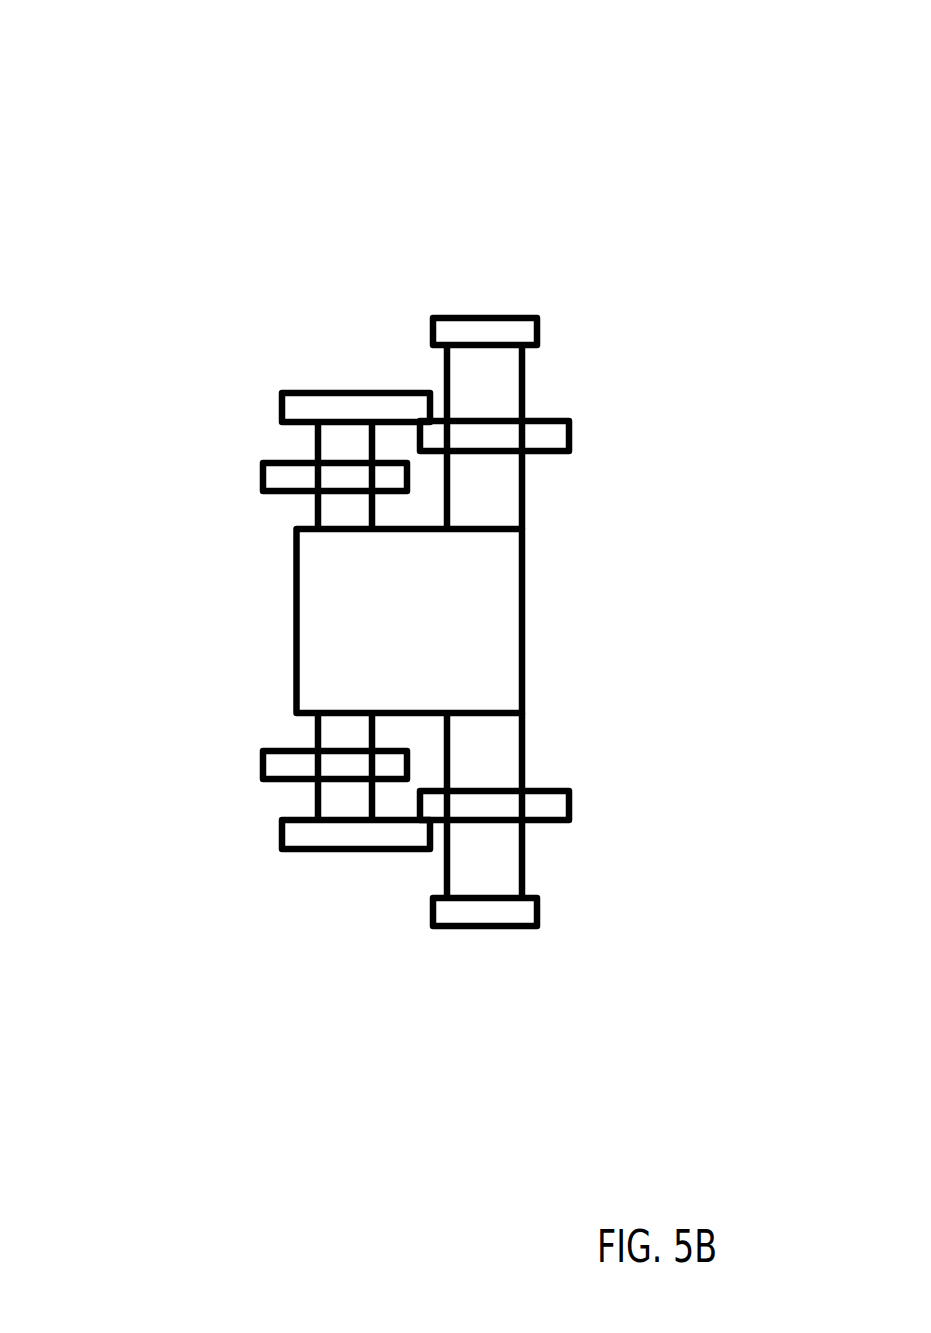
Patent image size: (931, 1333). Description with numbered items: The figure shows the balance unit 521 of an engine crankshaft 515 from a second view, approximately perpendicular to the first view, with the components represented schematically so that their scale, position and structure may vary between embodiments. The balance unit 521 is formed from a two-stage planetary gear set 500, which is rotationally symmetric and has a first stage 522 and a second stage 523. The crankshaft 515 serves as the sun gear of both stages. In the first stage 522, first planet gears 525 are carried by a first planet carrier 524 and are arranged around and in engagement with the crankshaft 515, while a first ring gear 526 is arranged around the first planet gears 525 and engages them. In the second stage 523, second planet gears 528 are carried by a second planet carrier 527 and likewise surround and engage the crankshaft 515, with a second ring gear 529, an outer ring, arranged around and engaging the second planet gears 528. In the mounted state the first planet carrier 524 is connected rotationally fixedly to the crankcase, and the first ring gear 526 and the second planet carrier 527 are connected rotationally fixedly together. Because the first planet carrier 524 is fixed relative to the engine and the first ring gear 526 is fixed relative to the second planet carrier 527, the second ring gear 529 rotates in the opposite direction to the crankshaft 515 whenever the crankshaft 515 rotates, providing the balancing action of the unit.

The two-stage planetary gear set 500 is at (478, 285).
The crankshaft 515 is at (320, 687).
The balance unit 521 is at (496, 105).
The first stage 522 is at (371, 1062).
The second stage 523 is at (477, 1062).
The first planet carrier 524 is at (263, 487).
The first planet gears 525 is at (327, 448).
The first ring gear 526 is at (295, 402).
The second planet carrier 527 is at (432, 807).
The second planet gears 528 is at (462, 384).
The second ring gear 529 is at (440, 328).